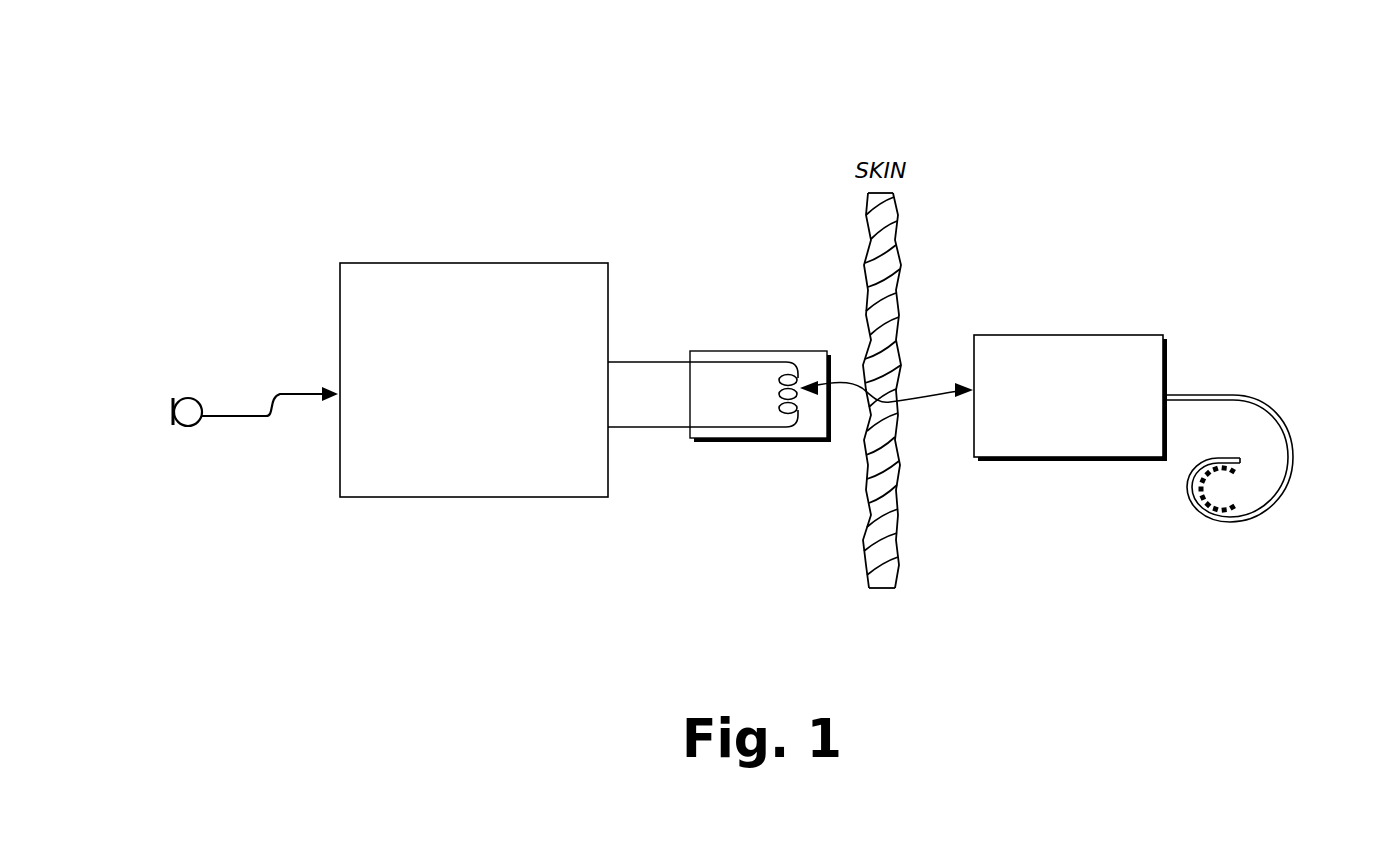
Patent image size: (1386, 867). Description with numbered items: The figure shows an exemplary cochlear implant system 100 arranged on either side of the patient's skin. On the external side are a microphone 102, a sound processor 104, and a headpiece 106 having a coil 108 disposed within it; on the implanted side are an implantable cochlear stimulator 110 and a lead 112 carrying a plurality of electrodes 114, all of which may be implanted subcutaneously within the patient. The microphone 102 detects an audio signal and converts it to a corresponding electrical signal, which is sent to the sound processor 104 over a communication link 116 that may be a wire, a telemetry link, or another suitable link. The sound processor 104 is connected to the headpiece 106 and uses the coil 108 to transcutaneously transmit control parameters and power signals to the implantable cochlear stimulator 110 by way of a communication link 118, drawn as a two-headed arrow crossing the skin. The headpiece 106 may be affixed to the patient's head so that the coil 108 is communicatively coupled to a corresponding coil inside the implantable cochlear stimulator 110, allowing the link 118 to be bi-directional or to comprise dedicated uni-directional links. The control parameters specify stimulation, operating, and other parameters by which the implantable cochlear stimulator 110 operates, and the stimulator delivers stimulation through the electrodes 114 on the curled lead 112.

The cochlear implant system 100 is at (287, 110).
The microphone 102 is at (192, 428).
The sound processor 104 is at (474, 380).
The headpiece 106 is at (763, 351).
The coil 108 is at (787, 428).
The implantable cochlear stimulator 110 is at (1070, 398).
The lead 112 is at (1282, 497).
The electrodes 114 is at (1207, 516).
The communication link 116 is at (274, 420).
The communication link 118 is at (916, 380).